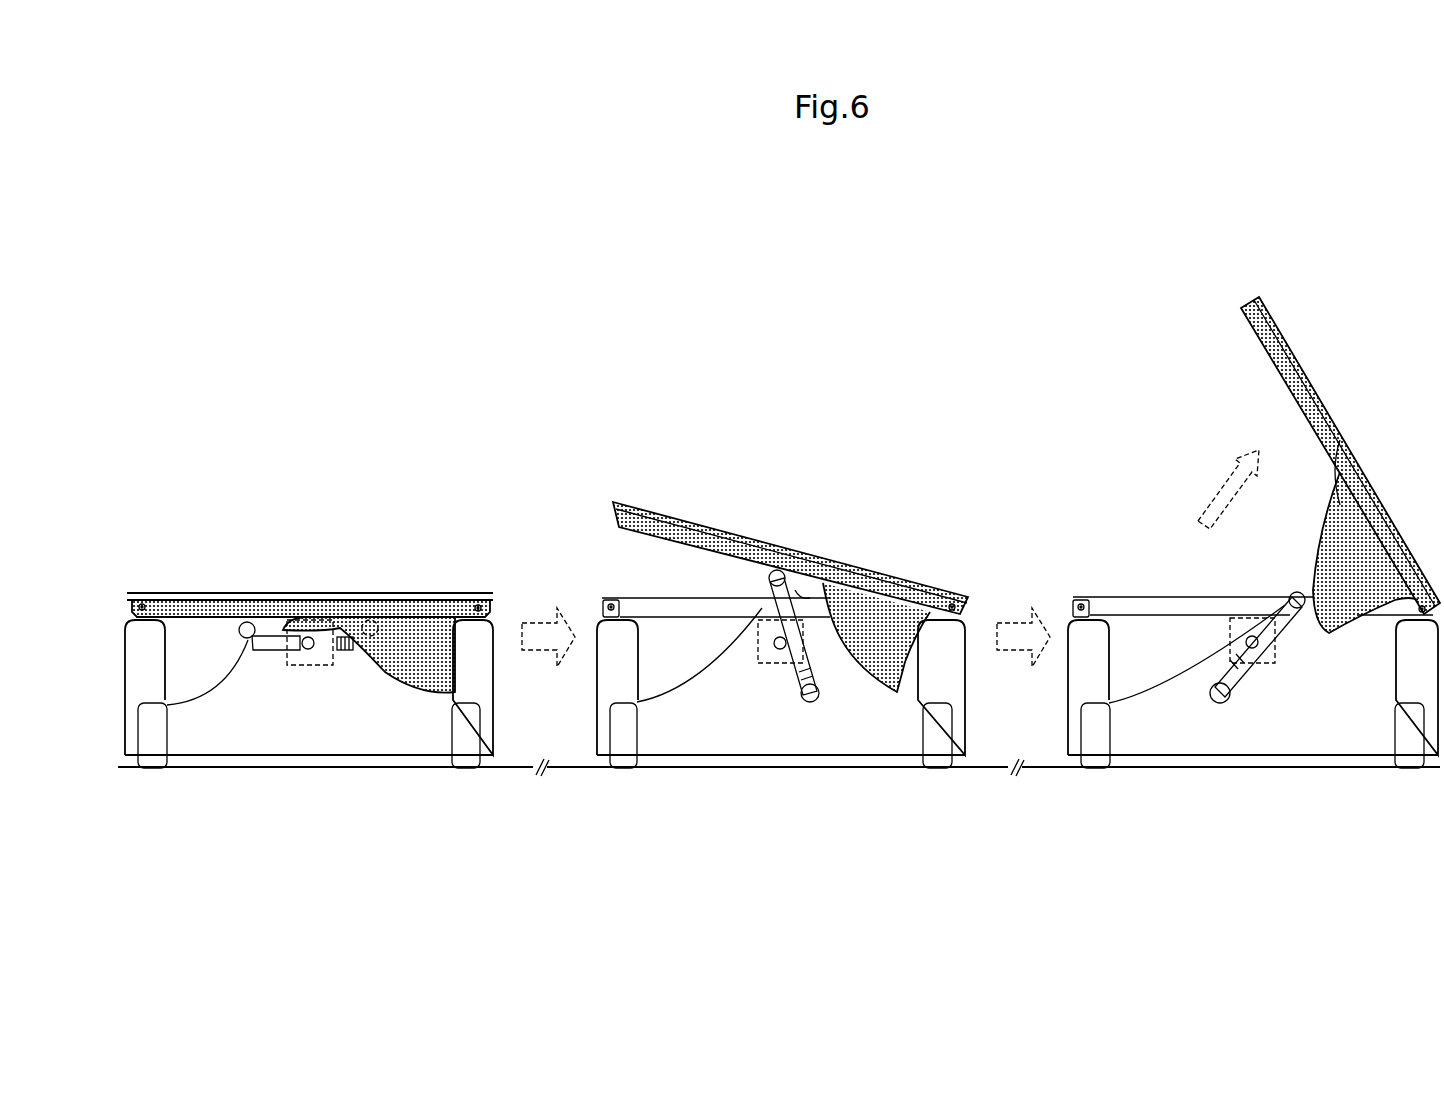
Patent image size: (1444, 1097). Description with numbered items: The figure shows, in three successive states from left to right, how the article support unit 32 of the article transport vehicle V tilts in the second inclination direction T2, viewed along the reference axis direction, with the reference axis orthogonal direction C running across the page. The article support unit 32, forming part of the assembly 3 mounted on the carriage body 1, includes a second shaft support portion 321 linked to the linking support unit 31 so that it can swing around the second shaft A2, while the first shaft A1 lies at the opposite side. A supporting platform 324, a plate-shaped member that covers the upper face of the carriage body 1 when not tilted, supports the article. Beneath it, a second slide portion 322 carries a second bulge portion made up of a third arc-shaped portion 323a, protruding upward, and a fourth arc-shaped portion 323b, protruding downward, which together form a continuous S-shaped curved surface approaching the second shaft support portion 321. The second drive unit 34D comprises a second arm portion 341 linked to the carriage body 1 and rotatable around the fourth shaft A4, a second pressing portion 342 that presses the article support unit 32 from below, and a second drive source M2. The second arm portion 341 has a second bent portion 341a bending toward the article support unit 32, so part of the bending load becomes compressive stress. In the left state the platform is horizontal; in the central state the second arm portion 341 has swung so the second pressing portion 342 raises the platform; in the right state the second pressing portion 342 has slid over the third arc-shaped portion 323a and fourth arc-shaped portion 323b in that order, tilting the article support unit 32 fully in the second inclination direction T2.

The carriage body 1 is at (178, 760).
The seat unit 3 is at (783, 394).
The linking support unit 31 is at (170, 640).
The article support unit 32 is at (783, 434).
The second shaft support portion 321 is at (488, 628).
The second slide portion 322 is at (200, 627).
The third arc-shaped portion 323a is at (345, 640).
The fourth arc-shaped portion 323b is at (390, 690).
The supporting platform 324 is at (248, 593).
The second arm portion 341 is at (292, 632).
The second bent portion 341a is at (265, 655).
The second pressing portion 342 is at (248, 632).
The second drive unit 34D is at (297, 685).
The first shaft A1 is at (143, 603).
The second shaft A2 is at (478, 604).
The fourth shaft A4 is at (308, 650).
The second drive source M2 is at (293, 685).
The article transport vehicle V is at (340, 395).
The second inclination direction T2 is at (1223, 489).
The reference axis orthogonal direction C is at (375, 918).